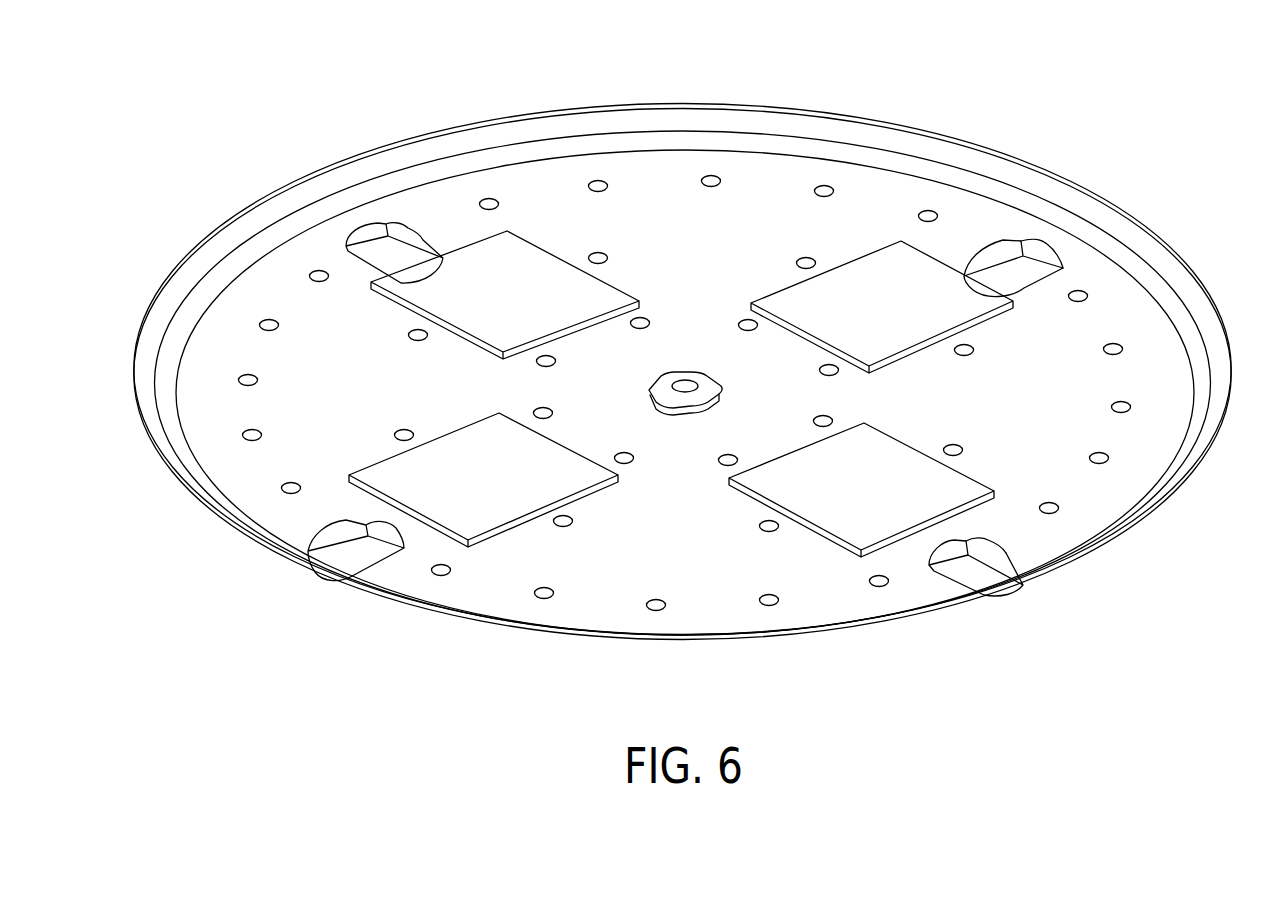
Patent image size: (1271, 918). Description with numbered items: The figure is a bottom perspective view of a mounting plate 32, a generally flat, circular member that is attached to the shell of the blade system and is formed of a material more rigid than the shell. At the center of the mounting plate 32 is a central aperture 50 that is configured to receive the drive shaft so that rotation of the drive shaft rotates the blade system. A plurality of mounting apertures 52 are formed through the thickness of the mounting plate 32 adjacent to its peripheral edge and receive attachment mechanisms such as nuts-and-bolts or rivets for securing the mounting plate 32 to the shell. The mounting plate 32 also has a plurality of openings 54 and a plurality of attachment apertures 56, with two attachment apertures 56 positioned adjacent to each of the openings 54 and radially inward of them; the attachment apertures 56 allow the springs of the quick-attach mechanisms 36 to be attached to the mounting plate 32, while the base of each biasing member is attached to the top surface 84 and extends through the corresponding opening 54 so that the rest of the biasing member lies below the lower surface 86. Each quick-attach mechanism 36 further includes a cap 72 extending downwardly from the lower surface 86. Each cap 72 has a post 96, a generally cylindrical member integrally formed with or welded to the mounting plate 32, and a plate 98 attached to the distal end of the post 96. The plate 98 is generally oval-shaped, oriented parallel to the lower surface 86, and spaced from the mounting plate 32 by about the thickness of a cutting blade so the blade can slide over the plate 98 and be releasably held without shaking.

The mounting plate 32 is at (693, 326).
The quick-attach mechanism 36 is at (344, 304).
The central aperture 50 is at (724, 394).
The mounting apertures 52 is at (817, 193).
The openings 54 is at (525, 262).
The attachment apertures 56 is at (642, 322).
The cap 72 is at (647, 377).
The top surface 84 is at (1155, 243).
The lower surface 86 is at (1123, 315).
The post 96 is at (1015, 238).
The plate 98 is at (1015, 283).